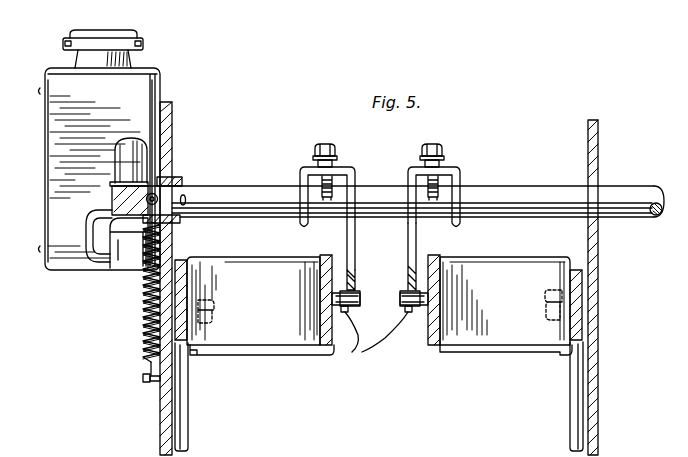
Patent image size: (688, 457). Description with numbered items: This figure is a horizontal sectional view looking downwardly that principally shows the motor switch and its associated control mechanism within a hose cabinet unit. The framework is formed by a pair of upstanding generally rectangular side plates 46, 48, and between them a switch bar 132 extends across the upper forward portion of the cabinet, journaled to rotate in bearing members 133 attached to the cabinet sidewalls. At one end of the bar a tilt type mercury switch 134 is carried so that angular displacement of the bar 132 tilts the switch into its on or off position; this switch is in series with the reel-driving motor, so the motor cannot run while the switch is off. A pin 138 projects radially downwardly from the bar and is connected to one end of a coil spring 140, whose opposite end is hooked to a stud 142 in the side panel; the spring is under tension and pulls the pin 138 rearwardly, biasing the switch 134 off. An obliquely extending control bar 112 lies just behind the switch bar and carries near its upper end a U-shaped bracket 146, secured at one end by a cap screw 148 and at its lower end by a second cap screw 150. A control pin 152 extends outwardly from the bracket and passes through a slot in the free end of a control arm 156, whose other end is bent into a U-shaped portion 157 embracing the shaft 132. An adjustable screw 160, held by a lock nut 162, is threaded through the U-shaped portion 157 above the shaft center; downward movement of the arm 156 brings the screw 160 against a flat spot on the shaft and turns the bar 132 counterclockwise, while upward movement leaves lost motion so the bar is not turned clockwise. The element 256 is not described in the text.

The housing 256 is at (154, 88).
The tilt type mercury switch 134 is at (138, 143).
The bearing members 133 is at (181, 178).
The pin 138 is at (158, 199).
The switch bar 132 is at (510, 192).
The U-shaped portion 157 is at (407, 172).
The control arm 156 is at (348, 255).
The adjustable screw 160 is at (327, 144).
The lock nut 162 is at (313, 157).
The U-shaped bracket 146 is at (285, 297).
The cap screw 148 is at (212, 316).
The second cap screw 150 is at (354, 291).
The control pin 152 is at (376, 343).
The coil spring 140 is at (148, 350).
The stud 142 is at (153, 381).
The side plate 46 is at (160, 432).
The control bar 112 is at (188, 430).
The side plate 48 is at (598, 434).